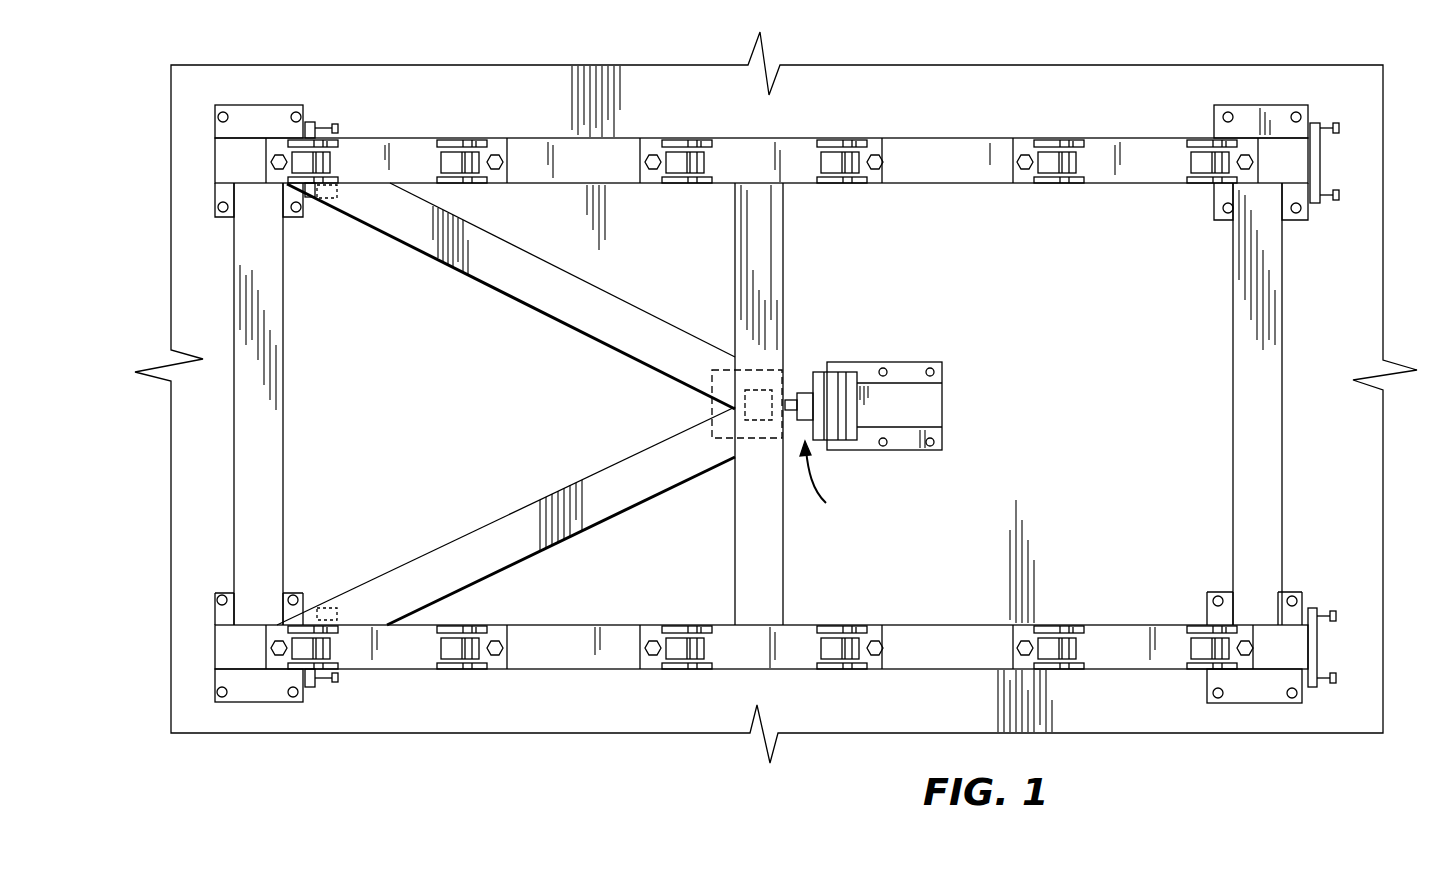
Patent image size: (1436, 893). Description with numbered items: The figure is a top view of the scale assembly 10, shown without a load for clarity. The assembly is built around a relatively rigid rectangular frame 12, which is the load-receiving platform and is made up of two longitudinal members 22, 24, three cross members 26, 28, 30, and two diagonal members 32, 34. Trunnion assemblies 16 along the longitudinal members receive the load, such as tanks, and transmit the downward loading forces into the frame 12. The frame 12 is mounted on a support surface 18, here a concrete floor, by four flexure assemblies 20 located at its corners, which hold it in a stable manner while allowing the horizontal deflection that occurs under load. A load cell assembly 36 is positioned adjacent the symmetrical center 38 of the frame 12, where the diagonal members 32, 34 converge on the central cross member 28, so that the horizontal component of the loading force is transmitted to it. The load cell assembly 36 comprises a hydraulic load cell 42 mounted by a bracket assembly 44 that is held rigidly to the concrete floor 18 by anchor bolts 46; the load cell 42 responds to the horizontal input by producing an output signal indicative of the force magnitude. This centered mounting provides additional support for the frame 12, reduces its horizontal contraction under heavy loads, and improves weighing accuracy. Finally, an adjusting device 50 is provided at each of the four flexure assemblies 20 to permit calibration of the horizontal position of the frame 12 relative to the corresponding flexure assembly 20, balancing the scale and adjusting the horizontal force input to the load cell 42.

The scale assembly 10 is at (1305, 312).
The frame 12 is at (761, 403).
The trunnion assemblies 16 is at (388, 152).
The support surface 18 is at (460, 448).
The flexure assemblies 20 is at (228, 125).
The longitudinal member 22 is at (950, 171).
The longitudinal member 24 is at (950, 661).
The cross member 26 is at (270, 445).
The cross member 28 is at (772, 260).
The cross member 30 is at (1270, 491).
The diagonal member 32 is at (535, 283).
The diagonal member 34 is at (493, 565).
The load cell assembly 36 is at (820, 489).
The symmetrical center 38 is at (760, 402).
The hydraulic load cell 42 is at (816, 405).
The bracket assembly 44 is at (894, 412).
The anchor bolts 46 is at (928, 366).
The adjusting devices 50 is at (334, 193).